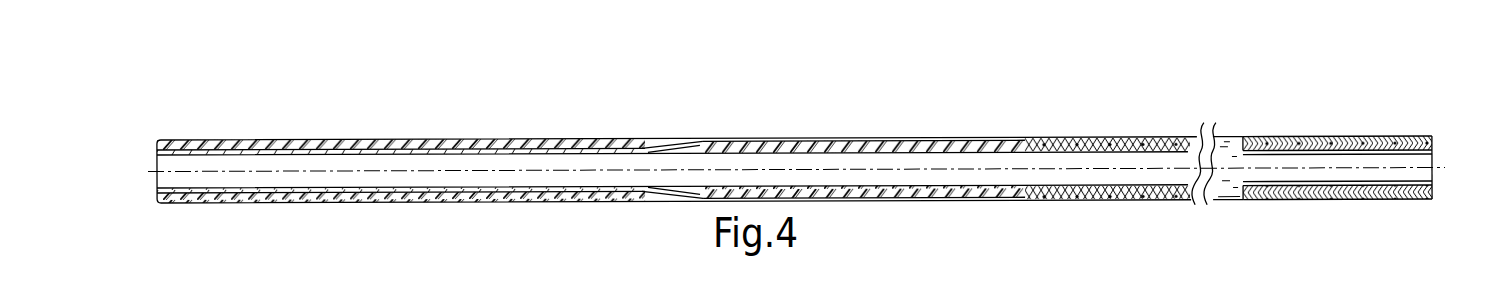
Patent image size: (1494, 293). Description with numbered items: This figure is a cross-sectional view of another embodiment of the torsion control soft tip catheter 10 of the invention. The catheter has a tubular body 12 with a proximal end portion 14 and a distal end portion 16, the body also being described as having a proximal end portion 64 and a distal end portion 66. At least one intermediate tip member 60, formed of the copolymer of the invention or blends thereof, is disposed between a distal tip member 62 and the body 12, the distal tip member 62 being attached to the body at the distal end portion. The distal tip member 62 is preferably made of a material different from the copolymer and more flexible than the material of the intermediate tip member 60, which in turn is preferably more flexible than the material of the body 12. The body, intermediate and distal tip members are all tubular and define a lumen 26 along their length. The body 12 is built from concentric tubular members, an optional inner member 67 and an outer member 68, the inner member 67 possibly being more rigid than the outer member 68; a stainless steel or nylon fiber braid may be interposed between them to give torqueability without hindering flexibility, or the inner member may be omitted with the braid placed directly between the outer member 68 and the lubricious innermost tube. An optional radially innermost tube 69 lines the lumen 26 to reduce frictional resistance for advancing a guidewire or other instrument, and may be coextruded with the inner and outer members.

The torsion control soft tip catheter 10 is at (872, 118).
The tubular body 12 is at (1160, 136).
The proximal end portion 14 is at (1353, 137).
The distal end portion 16 is at (235, 140).
The lumen 26 is at (1448, 156).
The intermediate tip member 60 is at (940, 137).
The distal tip member 62 is at (394, 140).
The proximal end portion 64 is at (1412, 137).
The distal end portion 66 is at (1125, 137).
The inner member 67 is at (1260, 137).
The outer member 68 is at (1313, 137).
The radially innermost tube 69 is at (607, 152).